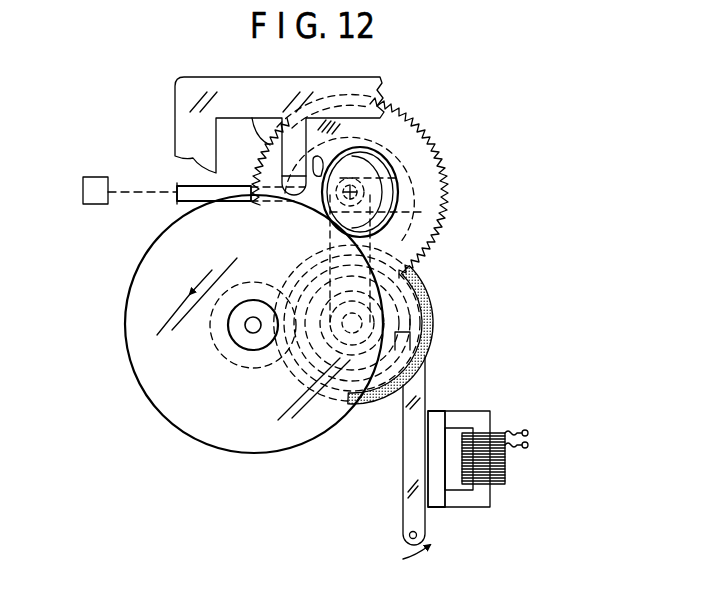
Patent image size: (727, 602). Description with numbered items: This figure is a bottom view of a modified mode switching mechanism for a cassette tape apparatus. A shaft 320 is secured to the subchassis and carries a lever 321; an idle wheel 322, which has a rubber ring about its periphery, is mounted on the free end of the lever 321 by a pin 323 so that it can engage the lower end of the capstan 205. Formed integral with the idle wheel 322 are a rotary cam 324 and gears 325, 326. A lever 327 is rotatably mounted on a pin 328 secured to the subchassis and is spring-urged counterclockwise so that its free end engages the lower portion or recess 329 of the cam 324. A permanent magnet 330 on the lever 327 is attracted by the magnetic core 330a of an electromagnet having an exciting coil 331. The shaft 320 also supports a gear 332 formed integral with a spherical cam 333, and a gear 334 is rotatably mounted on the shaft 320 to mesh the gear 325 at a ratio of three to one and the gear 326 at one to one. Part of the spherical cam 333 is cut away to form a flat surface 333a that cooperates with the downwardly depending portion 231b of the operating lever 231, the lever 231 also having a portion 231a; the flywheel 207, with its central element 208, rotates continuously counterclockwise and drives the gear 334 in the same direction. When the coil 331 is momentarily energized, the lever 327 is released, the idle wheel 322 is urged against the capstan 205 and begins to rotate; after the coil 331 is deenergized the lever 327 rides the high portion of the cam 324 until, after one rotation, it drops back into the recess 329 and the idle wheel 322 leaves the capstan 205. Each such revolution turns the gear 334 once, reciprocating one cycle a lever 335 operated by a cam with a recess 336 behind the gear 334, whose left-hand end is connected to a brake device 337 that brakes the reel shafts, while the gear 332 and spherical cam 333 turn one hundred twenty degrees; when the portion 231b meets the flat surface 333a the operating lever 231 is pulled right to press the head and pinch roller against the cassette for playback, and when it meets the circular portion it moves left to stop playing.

The flywheel 207 is at (125, 340).
The hub ring 208 is at (228, 360).
The capstan 205 is at (245, 327).
The operating lever 231 is at (238, 78).
The pawl portion of bracket 231a is at (250, 117).
The downwardly depending portion 231b is at (284, 170).
The brake device 337 is at (92, 177).
The lever 335 is at (177, 201).
The spherical cam 333 is at (373, 104).
The gear 332 is at (430, 133).
The flat surface 333a is at (319, 158).
The lever 321 is at (420, 214).
The shaft 320 is at (410, 170).
The gear 334 is at (400, 192).
The rotary cam 324 is at (326, 382).
The gear 325 is at (288, 364).
The gear 326 is at (427, 270).
The recess 336 is at (256, 232).
The pin 323 is at (423, 293).
The idle wheel 322 is at (433, 329).
The lower portion or recess of cam 329 is at (425, 350).
The lever 327 is at (403, 462).
The pin 328 is at (408, 533).
The permanent magnet 330 is at (445, 508).
The yoke 330a is at (477, 507).
The exciting coil 331 is at (507, 463).